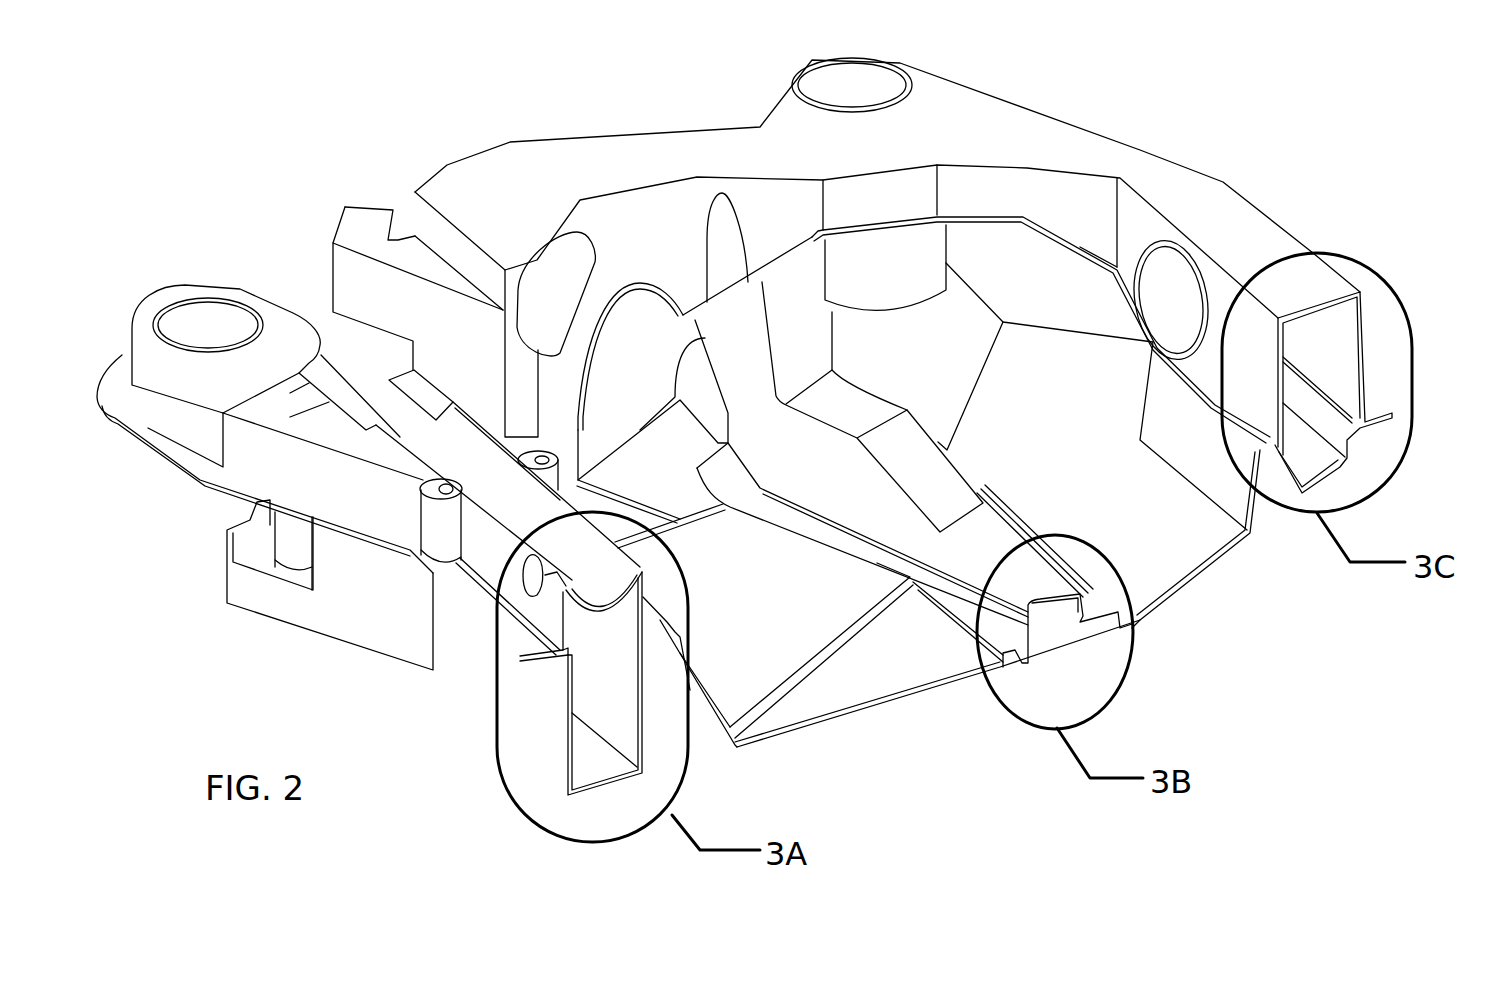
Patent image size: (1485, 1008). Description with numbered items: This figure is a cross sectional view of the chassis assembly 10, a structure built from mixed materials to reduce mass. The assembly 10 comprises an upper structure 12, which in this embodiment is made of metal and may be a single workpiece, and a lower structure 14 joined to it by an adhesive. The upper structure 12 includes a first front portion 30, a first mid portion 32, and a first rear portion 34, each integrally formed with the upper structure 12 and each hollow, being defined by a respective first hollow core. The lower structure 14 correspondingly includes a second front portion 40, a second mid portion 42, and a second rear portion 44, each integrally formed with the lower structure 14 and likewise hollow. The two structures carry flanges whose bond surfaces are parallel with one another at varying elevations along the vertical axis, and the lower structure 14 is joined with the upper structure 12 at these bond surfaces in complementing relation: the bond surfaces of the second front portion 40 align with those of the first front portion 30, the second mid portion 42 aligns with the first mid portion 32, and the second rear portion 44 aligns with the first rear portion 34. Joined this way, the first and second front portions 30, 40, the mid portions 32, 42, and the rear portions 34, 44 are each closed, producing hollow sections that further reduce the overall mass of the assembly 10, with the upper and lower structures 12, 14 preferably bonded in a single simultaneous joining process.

The chassis assembly 10 is at (282, 151).
The upper structure 12 is at (285, 337).
The lower structure 14 is at (276, 623).
The first front portion 30 is at (487, 566).
The first mid portion 32 is at (972, 577).
The first rear portion 34 is at (1215, 367).
The second front portion 40 is at (488, 662).
The second mid portion 42 is at (1067, 650).
The second rear portion 44 is at (1350, 486).